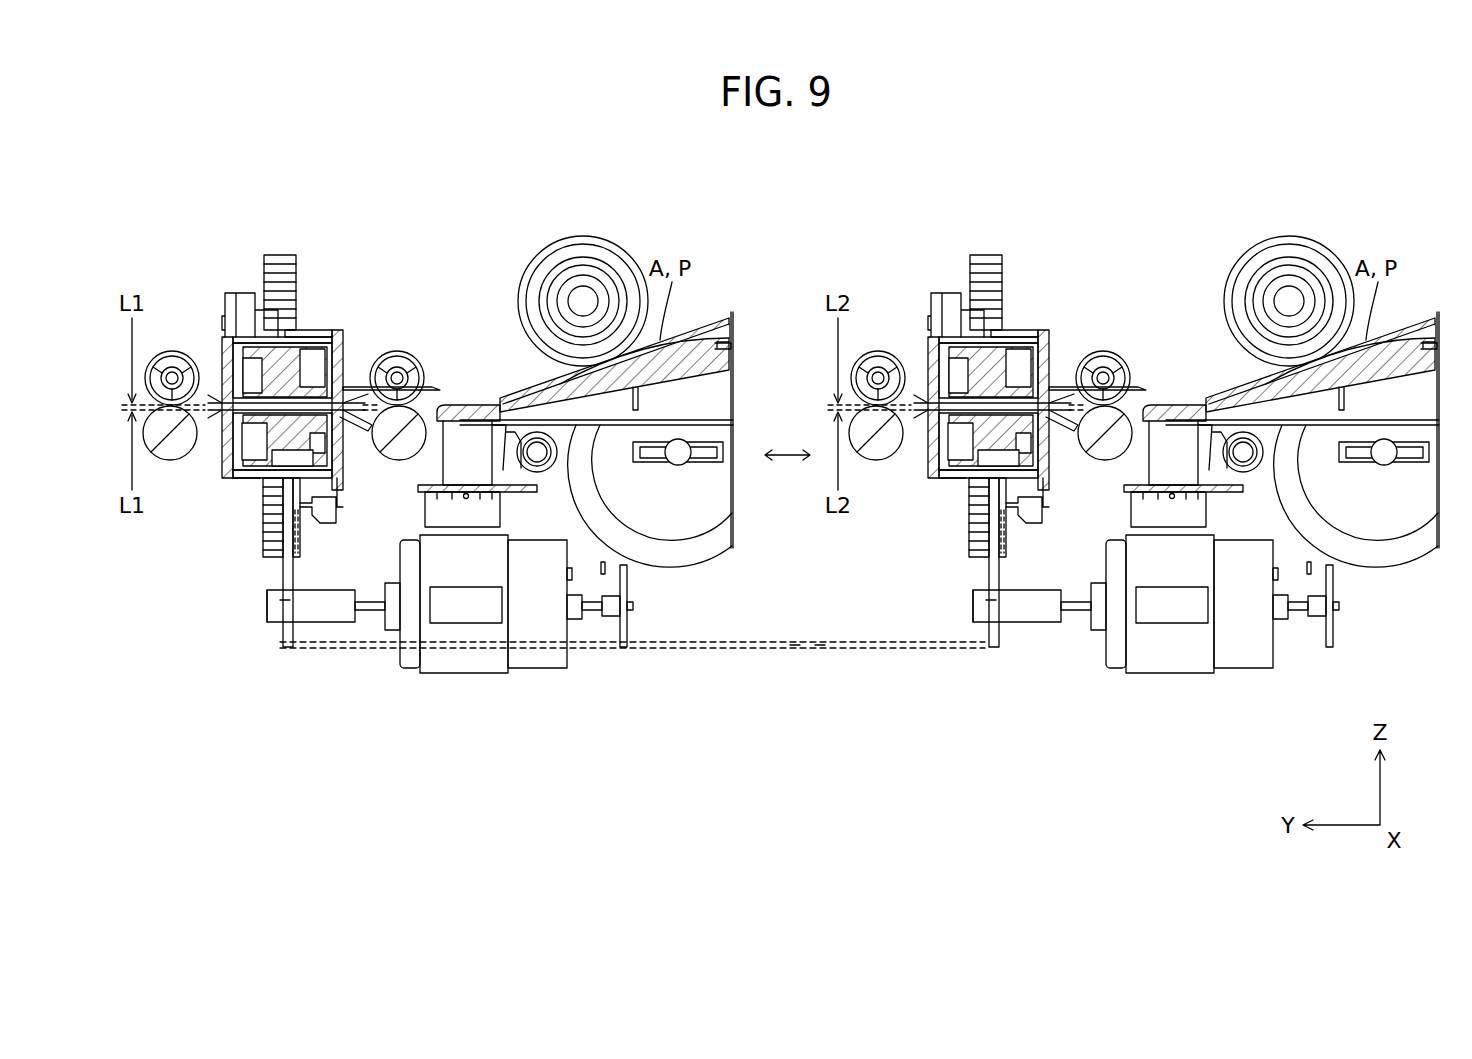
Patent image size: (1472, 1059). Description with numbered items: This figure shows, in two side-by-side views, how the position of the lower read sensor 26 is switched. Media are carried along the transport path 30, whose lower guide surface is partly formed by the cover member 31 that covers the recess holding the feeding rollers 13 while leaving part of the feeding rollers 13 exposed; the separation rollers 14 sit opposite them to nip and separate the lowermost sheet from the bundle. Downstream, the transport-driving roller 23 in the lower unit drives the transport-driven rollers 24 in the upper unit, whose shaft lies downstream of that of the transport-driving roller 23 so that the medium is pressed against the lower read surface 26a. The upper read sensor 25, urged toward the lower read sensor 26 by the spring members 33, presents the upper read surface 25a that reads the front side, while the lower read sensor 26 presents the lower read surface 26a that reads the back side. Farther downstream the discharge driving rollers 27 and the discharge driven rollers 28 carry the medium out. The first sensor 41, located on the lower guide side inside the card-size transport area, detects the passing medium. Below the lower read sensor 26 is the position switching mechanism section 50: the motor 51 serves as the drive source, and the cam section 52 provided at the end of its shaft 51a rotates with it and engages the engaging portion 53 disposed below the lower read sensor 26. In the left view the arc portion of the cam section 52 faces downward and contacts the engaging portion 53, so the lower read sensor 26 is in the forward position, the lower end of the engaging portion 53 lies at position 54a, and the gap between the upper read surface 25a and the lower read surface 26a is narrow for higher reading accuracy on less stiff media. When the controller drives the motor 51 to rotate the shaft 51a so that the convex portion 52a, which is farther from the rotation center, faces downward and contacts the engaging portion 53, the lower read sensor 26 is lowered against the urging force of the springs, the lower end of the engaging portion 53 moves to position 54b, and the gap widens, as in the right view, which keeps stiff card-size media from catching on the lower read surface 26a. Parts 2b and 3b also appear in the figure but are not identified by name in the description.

The frame portion 2b is at (1046, 524).
The frame portion 3b is at (300, 530).
The feeding rollers 13 is at (684, 524).
The separation rollers 14 is at (592, 237).
The transport-driving roller 23 is at (394, 440).
The transport-driven rollers 24 is at (395, 352).
The upper read sensor 25 is at (316, 329).
The upper read surface 25a is at (252, 352).
The lower read sensor 26 is at (252, 481).
The lower read surface 26a is at (233, 482).
The discharge driving rollers 27 is at (185, 461).
The discharge driven rollers 28 is at (172, 352).
The transport path 30 is at (357, 403).
The cover member 31 is at (720, 322).
The spring members 33 is at (285, 255).
The first sensor 41 is at (462, 455).
The position switching mechanism section 50 is at (211, 659).
The motor 51 is at (452, 662).
The shaft 51a is at (368, 612).
The cam section 52 is at (318, 607).
The convex portion 52a is at (268, 625).
The engaging portion 53 is at (283, 588).
The position 54a is at (800, 642).
The position 54b is at (822, 650).